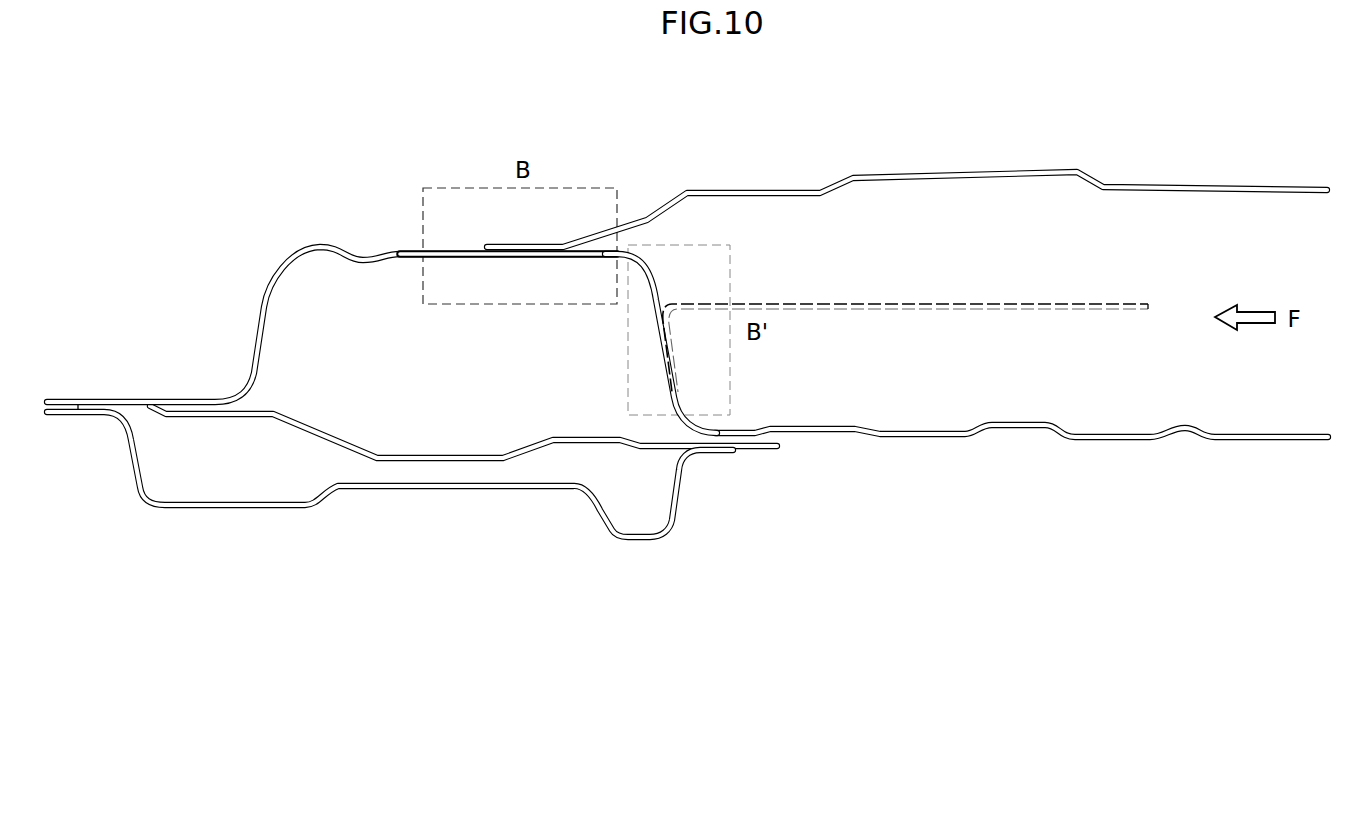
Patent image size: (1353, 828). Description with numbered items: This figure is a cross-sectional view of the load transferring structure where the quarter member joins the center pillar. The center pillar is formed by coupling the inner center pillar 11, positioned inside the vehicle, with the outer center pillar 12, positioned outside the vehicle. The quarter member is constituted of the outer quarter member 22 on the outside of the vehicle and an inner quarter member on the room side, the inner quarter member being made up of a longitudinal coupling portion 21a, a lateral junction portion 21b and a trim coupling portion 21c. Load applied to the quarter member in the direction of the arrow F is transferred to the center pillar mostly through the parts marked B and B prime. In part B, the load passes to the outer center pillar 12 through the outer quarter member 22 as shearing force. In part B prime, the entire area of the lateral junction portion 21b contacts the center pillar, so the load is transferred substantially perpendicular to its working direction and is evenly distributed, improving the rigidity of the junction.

The inner center pillar 11 is at (425, 487).
The outer center pillar 12 is at (256, 353).
The longitudinal coupling portion 21a is at (907, 310).
The lateral junction portion 21b is at (672, 352).
The trim coupling portion 21c is at (940, 432).
The outer quarter member 22 is at (963, 173).